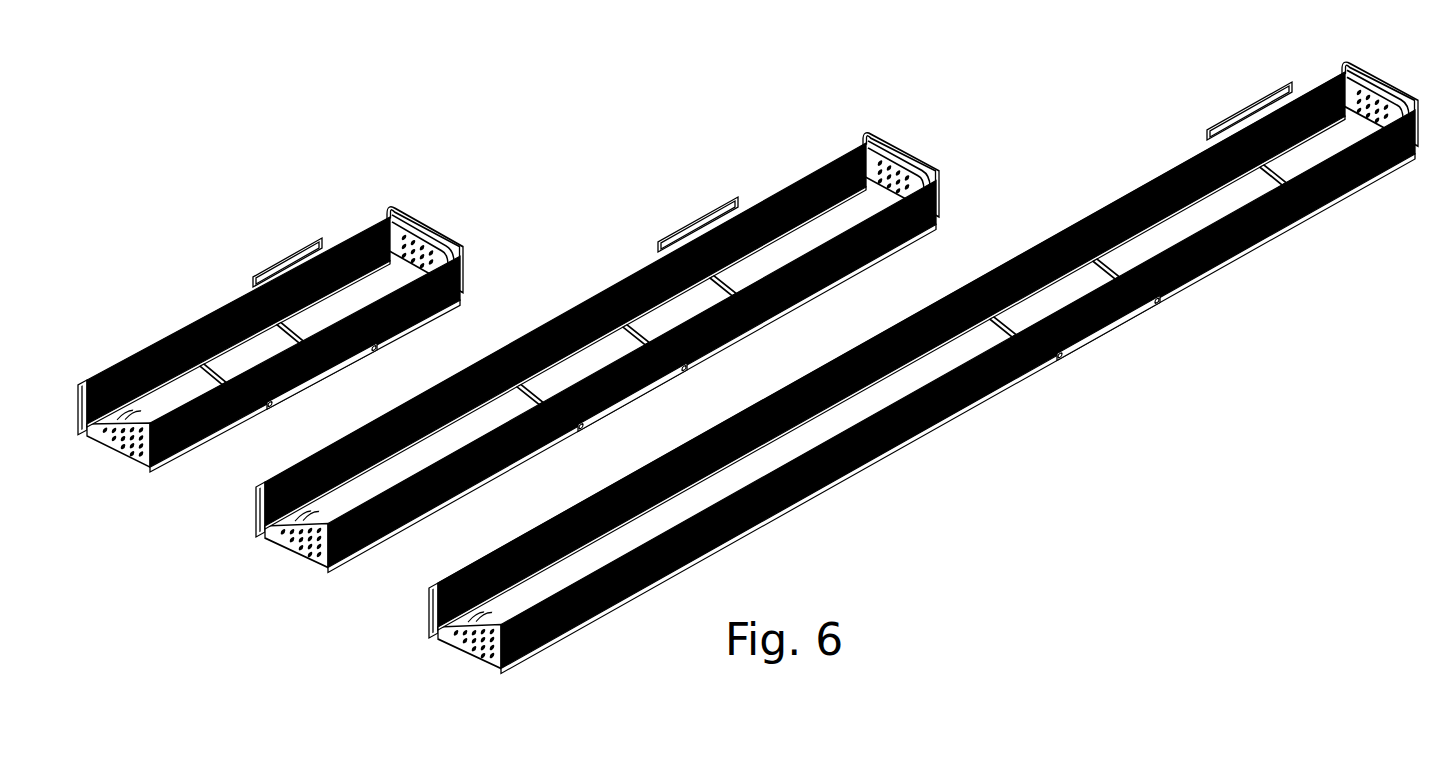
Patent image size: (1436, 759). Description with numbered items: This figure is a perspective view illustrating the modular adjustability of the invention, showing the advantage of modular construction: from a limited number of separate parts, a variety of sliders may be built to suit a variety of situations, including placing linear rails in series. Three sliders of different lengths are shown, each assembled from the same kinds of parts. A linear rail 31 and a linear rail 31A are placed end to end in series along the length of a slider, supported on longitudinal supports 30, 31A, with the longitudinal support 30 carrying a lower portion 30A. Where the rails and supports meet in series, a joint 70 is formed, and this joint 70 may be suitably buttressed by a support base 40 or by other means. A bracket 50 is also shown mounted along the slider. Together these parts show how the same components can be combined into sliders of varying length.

The longitudinal support 30 is at (748, 365).
The housing bottom flange 30A is at (428, 512).
The linear rail 31 is at (368, 225).
The linear rail 31A is at (838, 150).
The support base 40 is at (328, 379).
The mounting bracket 50 is at (316, 250).
The joint 70 is at (1042, 243).